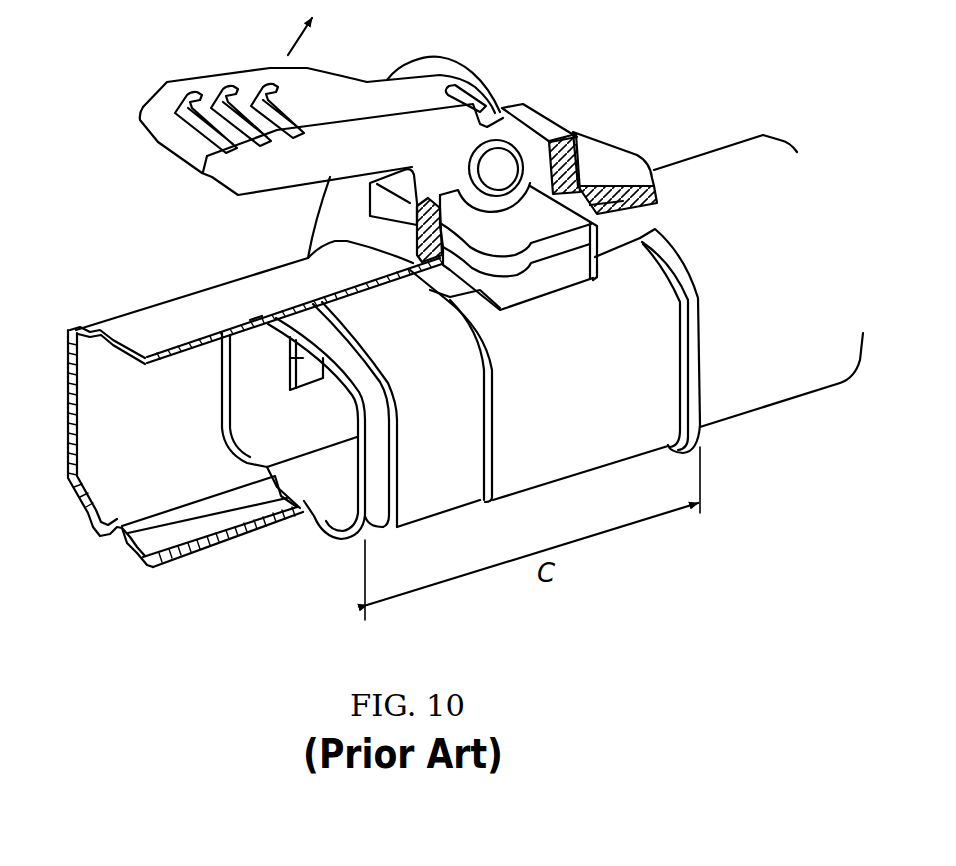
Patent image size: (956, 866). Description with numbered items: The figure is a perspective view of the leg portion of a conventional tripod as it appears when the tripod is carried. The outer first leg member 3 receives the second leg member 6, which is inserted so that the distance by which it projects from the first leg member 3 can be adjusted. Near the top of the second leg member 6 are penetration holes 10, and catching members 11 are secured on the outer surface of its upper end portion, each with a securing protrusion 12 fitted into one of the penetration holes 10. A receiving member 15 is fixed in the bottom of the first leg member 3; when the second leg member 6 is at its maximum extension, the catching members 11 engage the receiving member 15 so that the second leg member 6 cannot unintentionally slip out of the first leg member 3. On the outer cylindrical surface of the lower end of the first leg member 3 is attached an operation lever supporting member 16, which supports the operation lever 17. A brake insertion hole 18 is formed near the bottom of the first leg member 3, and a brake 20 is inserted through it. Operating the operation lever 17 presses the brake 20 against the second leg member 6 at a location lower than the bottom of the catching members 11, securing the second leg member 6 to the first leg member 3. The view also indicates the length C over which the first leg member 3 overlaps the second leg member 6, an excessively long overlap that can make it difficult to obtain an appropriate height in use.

The first leg member 3 is at (165, 284).
The second leg member 6 is at (727, 132).
The penetration hole 10 is at (290, 358).
The catching member 11 is at (442, 490).
The securing protrusion 12 is at (256, 318).
The receiving member 15 is at (567, 460).
The operation lever supporting member 16 is at (597, 160).
The operation lever 17 is at (158, 103).
The brake insertion hole 18 is at (368, 224).
The brake 20 is at (530, 270).